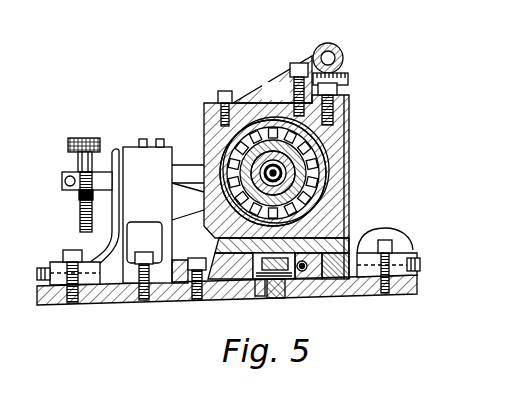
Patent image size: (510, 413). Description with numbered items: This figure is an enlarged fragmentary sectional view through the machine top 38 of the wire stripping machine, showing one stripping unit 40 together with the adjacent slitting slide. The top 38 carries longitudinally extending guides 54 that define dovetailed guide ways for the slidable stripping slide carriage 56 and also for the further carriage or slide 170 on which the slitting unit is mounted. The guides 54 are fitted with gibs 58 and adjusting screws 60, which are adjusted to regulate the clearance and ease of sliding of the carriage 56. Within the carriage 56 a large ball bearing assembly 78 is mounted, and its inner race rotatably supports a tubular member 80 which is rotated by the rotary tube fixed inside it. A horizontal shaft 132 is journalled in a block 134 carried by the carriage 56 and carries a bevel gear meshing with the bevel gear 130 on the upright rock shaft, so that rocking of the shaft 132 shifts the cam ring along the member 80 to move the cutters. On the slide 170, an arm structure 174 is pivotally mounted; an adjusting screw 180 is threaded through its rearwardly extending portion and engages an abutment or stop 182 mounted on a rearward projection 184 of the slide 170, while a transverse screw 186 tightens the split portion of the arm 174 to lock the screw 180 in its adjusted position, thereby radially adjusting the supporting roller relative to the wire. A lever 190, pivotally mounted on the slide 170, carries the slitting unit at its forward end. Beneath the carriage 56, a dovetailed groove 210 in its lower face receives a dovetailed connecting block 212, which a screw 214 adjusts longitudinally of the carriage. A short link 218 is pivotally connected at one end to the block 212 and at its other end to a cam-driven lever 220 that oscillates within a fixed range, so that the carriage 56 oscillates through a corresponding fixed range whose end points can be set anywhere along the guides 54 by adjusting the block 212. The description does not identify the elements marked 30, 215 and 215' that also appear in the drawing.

The support surface 30 is at (6, 298).
The machine top 38 is at (118, 305).
The stripping unit 40 is at (300, 52).
The guides 54 is at (58, 259).
The slide carriage 56 is at (348, 128).
The gibs 58 is at (358, 250).
The adjusting screws 60 is at (50, 266).
The ball bearing assembly 78 is at (348, 156).
The tubular member 80 is at (276, 91).
The bevel gear 130 is at (344, 72).
The horizontal shaft 132 is at (333, 49).
The block 134 is at (268, 79).
The slide 170 is at (113, 151).
The arm structure 174 is at (180, 210).
The adjusting screw 180 is at (73, 138).
The abutment or stop 182 is at (78, 197).
The rearward projection 184 is at (78, 215).
The transverse screw 186 is at (67, 180).
The lever 190 is at (172, 183).
The dovetailed groove 210 is at (340, 293).
The connecting block 212 is at (278, 268).
The screw 214 is at (305, 280).
The bracket foot 215 is at (120, 279).
The bracket body 215' is at (147, 200).
The short link 218 is at (260, 297).
The lever 220 is at (276, 298).